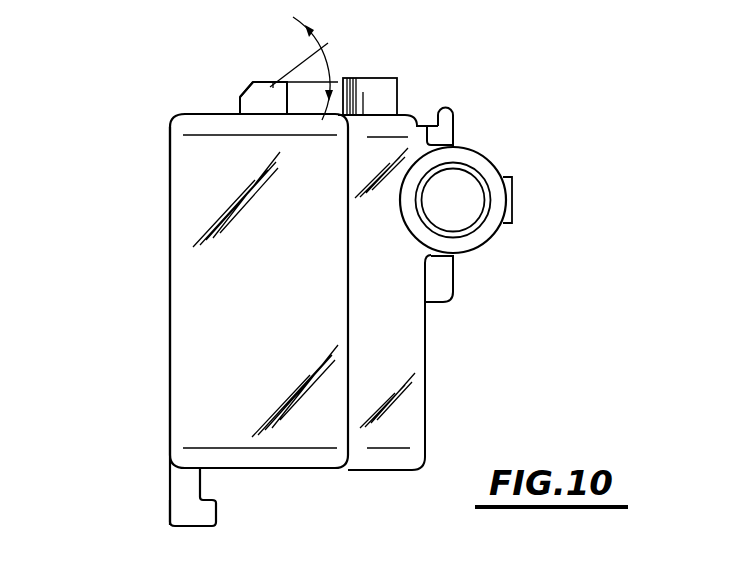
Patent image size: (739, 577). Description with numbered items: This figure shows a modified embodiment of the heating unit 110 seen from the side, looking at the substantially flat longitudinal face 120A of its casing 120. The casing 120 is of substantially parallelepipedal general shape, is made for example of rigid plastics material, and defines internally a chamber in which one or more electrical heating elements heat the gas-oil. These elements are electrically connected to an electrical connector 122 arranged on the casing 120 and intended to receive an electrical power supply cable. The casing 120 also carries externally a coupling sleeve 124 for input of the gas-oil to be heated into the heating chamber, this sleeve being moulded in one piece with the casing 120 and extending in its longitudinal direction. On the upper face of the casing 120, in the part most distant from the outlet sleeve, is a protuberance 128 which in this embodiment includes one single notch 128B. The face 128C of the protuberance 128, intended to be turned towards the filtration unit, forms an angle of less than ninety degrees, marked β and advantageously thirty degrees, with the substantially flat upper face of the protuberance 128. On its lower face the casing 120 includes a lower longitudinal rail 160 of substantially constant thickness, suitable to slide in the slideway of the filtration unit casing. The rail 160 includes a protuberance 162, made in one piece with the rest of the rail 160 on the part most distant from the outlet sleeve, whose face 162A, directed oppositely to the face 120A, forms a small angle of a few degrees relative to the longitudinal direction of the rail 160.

The heating unit 110 is at (142, 154).
The casing 120 is at (259, 291).
The flat longitudinal face 120A is at (170, 310).
The electrical connector 122 is at (426, 124).
The coupling sleeve 124 is at (474, 230).
The protuberance 128 is at (226, 99).
The notch 128B is at (274, 83).
The face of the protuberance 128C is at (254, 89).
The lower longitudinal rail 160 is at (178, 508).
The protuberance 162 is at (206, 518).
The face of the protuberance 162A is at (216, 506).